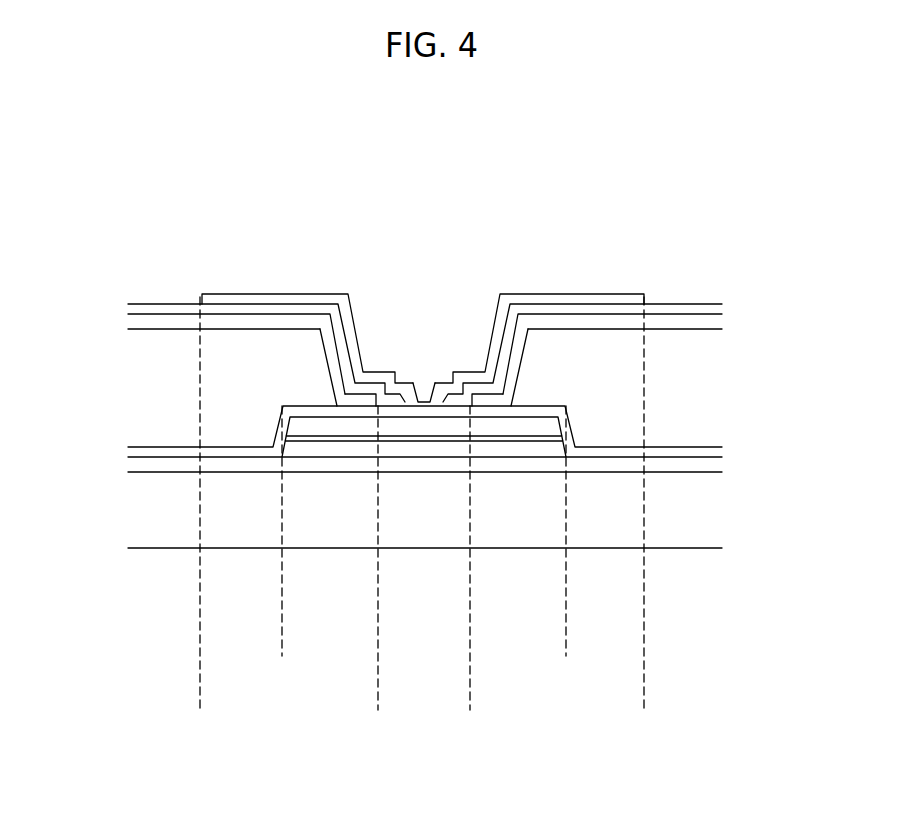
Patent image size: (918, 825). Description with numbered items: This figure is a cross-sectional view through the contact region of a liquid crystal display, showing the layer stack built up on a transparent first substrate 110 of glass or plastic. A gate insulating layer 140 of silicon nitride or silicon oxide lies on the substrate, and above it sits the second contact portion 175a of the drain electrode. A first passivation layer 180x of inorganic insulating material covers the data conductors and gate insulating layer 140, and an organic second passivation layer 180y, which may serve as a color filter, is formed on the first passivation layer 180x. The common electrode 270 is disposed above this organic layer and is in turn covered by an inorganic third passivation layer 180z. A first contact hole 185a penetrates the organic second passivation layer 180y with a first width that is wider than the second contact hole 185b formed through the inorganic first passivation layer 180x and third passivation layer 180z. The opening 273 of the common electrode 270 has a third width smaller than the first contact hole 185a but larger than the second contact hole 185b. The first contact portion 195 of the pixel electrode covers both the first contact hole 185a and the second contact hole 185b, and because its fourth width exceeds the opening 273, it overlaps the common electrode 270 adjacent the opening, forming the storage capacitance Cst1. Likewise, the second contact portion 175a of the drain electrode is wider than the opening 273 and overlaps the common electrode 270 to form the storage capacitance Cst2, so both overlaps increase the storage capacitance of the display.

The first substrate 110 is at (708, 527).
The gate insulating layer 140 is at (708, 465).
The second contact portion of the drain electrode 175a is at (323, 421).
The first passivation layer 180x is at (128, 447).
The second passivation layer 180y is at (140, 371).
The third passivation layer 180z is at (153, 308).
The first contact hole 185a is at (325, 342).
The second contact hole 185b is at (406, 404).
The first contact portion of the pixel electrode 195 is at (570, 297).
The common electrode 270 is at (232, 323).
The opening of the common electrode 273 is at (377, 401).
The storage capacitance Cst1 is at (644, 705).
The storage capacitance Cst2 is at (566, 652).